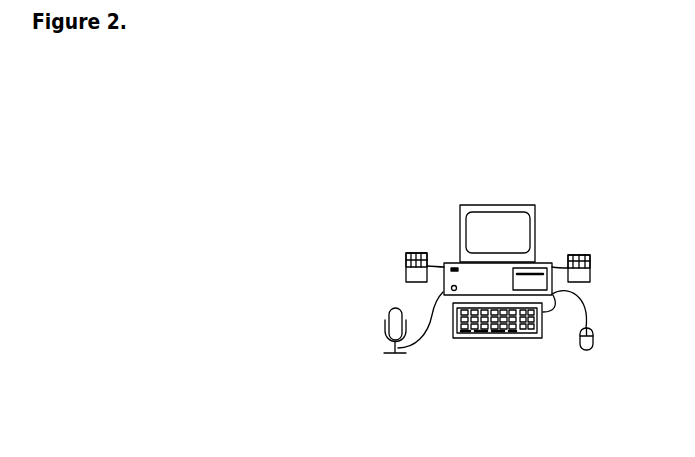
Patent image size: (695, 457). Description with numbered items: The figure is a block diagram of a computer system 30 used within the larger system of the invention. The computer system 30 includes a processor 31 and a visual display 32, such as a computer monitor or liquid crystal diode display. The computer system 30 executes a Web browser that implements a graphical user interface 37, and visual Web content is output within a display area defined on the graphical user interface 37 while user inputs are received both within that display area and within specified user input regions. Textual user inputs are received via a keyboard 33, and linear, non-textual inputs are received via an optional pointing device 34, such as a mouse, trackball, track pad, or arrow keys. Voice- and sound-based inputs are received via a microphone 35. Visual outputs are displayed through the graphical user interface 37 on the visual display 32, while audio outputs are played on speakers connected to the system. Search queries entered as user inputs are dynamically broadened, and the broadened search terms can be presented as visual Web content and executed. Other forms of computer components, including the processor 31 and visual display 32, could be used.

The computer system 30 is at (479, 168).
The processor 31 is at (443, 279).
The visual display 32 is at (460, 217).
The keyboard 33 is at (473, 339).
The pointing device 34 is at (587, 350).
The microphone 35 is at (383, 333).
The graphical user interface 37 is at (517, 216).